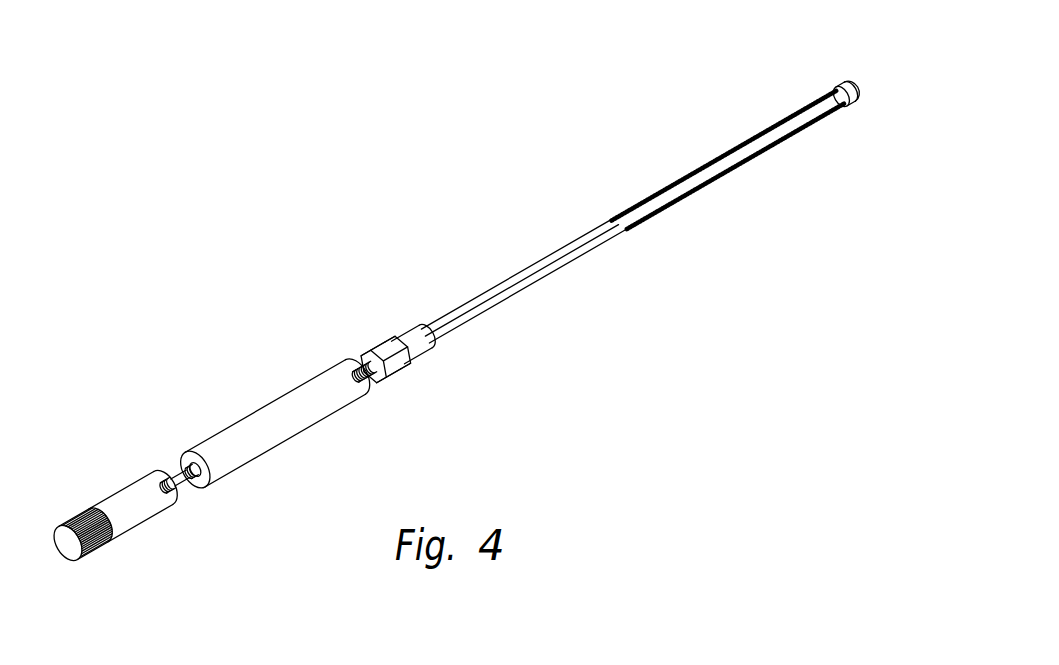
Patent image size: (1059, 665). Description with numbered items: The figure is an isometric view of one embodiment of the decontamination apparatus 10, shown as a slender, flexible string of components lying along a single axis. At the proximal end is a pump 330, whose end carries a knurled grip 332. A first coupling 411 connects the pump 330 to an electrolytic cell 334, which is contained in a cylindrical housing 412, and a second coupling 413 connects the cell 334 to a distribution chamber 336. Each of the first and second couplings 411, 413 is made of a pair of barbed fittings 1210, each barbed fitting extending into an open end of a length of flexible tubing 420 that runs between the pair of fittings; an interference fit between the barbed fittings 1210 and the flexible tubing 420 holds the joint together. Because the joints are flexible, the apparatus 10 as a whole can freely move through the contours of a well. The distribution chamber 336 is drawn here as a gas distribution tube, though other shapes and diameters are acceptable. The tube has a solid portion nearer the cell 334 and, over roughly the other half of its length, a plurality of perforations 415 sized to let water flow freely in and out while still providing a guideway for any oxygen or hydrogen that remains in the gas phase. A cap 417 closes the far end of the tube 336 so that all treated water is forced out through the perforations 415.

The decontamination apparatus 10 is at (319, 181).
The pump 330 is at (113, 496).
The knurled grip 332 is at (77, 517).
The electrolytic cell 334 is at (192, 413).
The first coupling 411 is at (172, 471).
The housing 412 is at (268, 404).
The second coupling 413 is at (371, 348).
The flexible tubing 420 is at (193, 492).
The barbed fittings 1210 is at (172, 493).
The distribution chamber 336 is at (555, 228).
The perforations 415 is at (704, 164).
The cap 417 is at (845, 78).